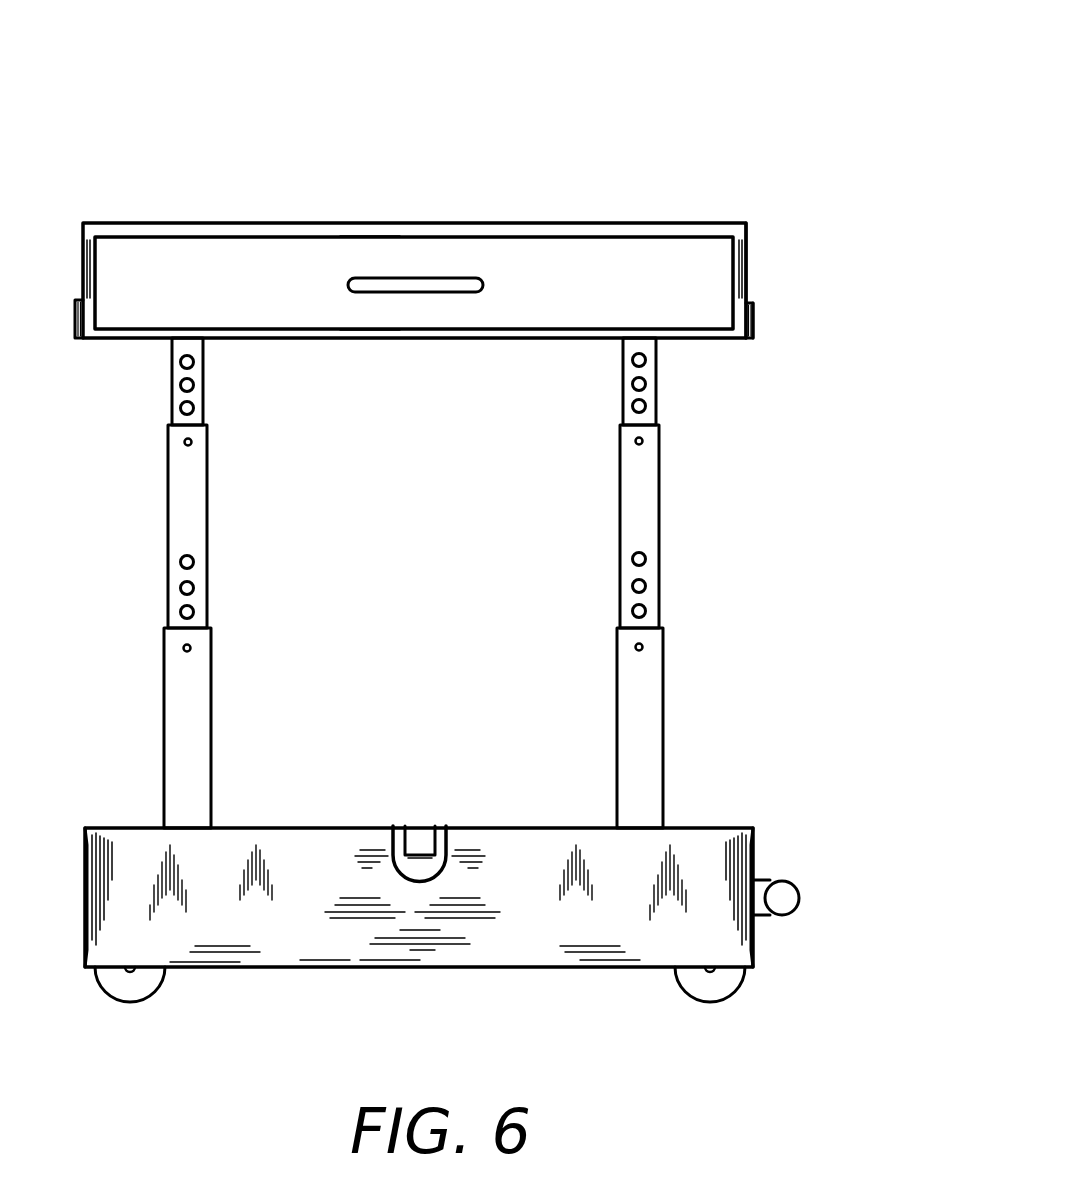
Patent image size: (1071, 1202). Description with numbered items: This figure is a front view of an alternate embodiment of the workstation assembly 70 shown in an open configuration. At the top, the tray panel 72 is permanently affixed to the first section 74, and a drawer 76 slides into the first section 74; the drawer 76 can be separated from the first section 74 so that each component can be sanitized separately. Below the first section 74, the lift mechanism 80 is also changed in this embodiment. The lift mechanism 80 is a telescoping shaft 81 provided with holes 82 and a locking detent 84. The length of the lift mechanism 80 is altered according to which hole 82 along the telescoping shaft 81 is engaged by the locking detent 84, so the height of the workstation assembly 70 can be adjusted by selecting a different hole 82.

The workstation assembly 70 is at (641, 77).
The tray panel 72 is at (391, 222).
The first section 74 is at (772, 235).
The drawer 76 is at (677, 252).
The lift mechanism 80 is at (617, 738).
The telescoping shaft 81 is at (193, 737).
The holes 82 is at (191, 556).
The locking detent 84 is at (191, 648).